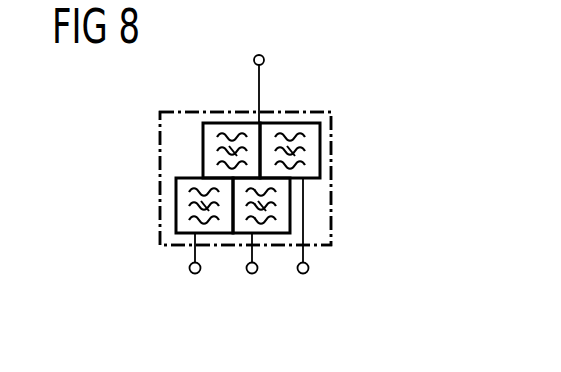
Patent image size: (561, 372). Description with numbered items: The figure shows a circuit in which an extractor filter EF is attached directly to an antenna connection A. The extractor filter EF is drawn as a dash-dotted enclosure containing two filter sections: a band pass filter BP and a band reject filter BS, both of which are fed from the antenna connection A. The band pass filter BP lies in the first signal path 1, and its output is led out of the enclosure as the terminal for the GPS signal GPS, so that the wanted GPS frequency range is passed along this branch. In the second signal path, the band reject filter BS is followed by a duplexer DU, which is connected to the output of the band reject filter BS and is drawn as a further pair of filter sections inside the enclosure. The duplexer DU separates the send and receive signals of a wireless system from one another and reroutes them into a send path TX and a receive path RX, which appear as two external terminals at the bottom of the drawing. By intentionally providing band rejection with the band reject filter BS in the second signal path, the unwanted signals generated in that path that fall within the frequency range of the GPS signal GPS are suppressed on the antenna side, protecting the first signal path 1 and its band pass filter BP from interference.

The antenna connection A is at (259, 69).
The band reject filter BS is at (232, 129).
The band pass filter BP is at (290, 129).
The extractor filter EF is at (356, 141).
The duplexer DU is at (133, 199).
The first signal path 1 is at (303, 224).
The send path TX is at (189, 270).
The receive path RX is at (252, 274).
The GPS signal GPS is at (307, 272).